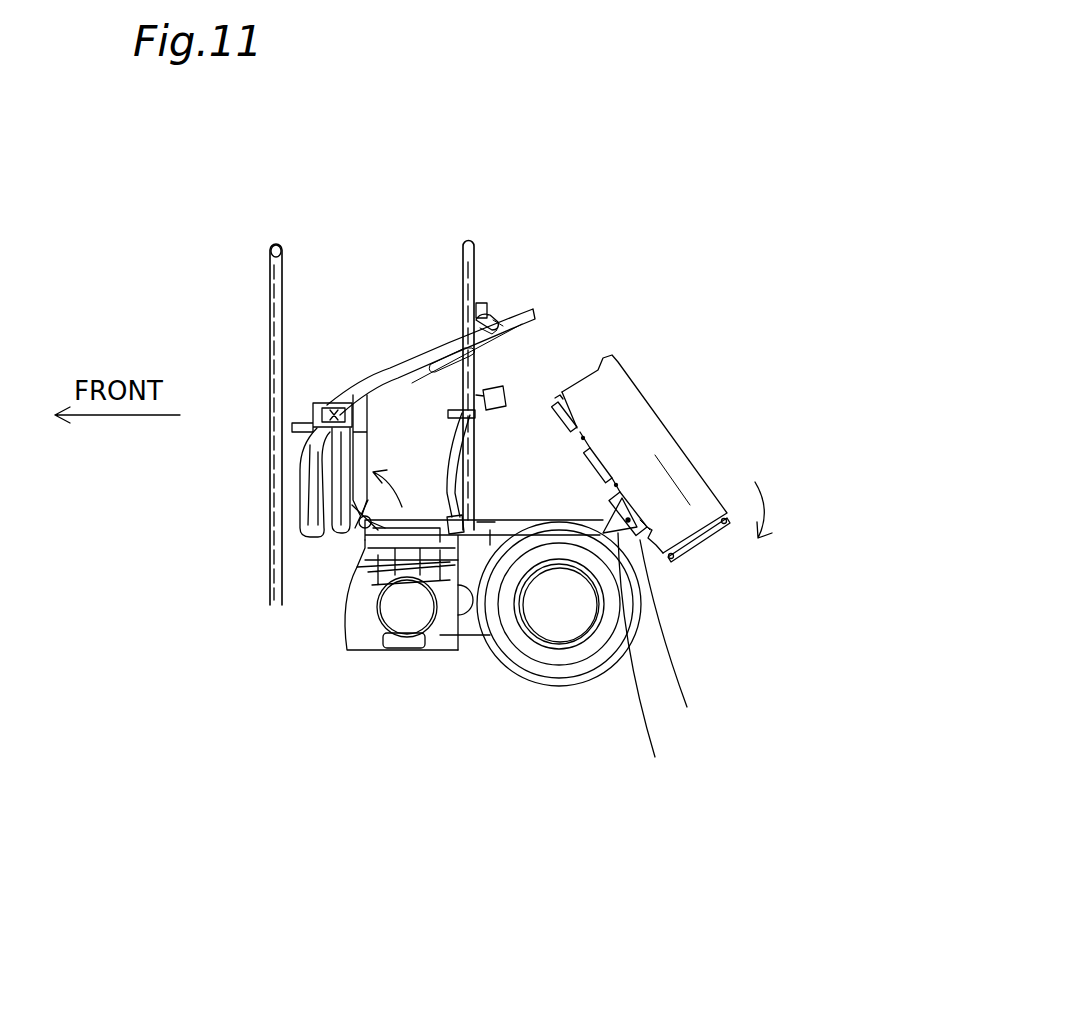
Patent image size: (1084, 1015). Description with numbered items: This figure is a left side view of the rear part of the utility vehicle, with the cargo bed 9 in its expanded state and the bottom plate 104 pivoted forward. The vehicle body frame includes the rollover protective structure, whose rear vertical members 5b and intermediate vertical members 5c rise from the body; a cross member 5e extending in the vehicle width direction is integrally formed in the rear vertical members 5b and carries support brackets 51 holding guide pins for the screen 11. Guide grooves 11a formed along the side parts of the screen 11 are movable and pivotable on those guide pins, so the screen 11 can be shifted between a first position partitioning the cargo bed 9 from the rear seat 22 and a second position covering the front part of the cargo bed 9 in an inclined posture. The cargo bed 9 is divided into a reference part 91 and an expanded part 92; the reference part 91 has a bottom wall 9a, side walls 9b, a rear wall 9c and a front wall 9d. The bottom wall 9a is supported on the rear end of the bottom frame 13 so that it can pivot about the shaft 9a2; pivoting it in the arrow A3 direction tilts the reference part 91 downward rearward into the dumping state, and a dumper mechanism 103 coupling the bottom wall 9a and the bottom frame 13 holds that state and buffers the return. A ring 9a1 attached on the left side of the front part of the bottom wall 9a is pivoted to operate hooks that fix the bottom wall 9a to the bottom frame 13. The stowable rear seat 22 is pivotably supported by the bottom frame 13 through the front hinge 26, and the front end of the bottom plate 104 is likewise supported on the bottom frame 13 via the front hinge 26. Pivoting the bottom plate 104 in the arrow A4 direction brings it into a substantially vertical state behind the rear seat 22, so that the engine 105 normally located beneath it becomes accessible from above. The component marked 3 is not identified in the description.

The wheel 3 is at (557, 603).
The rear vertical members 5b is at (468, 258).
The intermediate vertical members 5c is at (270, 272).
The cross member 5e is at (482, 318).
The cargo bed 9 is at (751, 375).
The bottom wall 9a is at (612, 522).
The ring 9a1 is at (600, 408).
The shaft 9a2 is at (630, 520).
The side walls 9b is at (637, 412).
The rear wall 9c is at (712, 537).
The front wall 9d is at (585, 370).
The screen 11 is at (530, 318).
The guide grooves 11a is at (488, 334).
The bottom frame 13 is at (458, 640).
The rear seat 22 is at (329, 373).
The front hinge 26 is at (366, 530).
The support brackets 51 is at (497, 321).
The reference part 91 is at (622, 361).
The expanded part 92 is at (423, 385).
The dumper mechanism 103 is at (690, 633).
The bottom plate 104 is at (352, 540).
The engine 105 is at (402, 600).
The arrow A3 direction A3 is at (784, 510).
The arrow A4 direction A4 is at (401, 481).